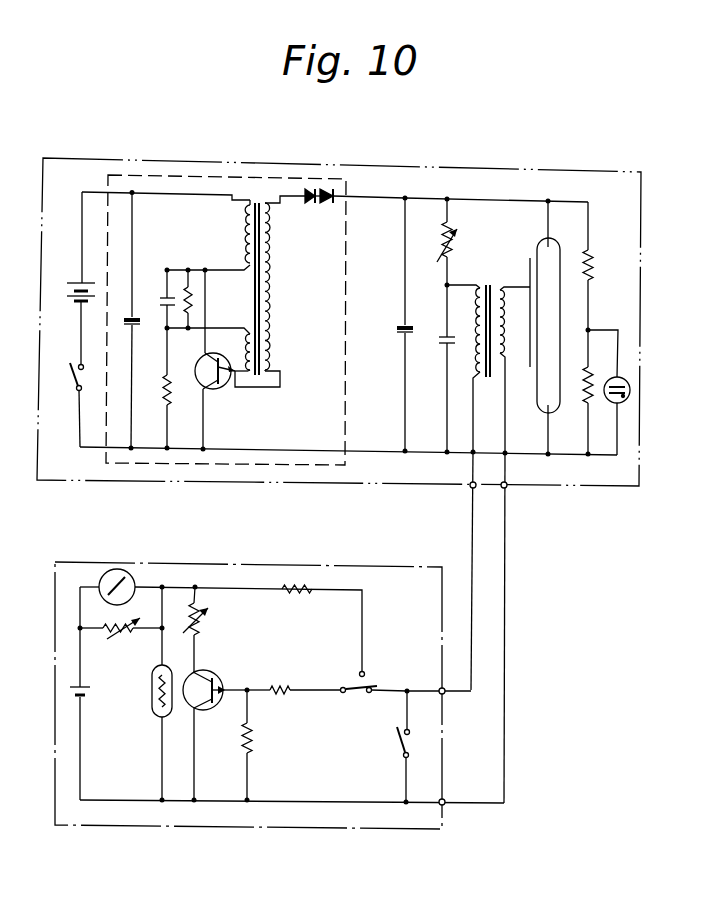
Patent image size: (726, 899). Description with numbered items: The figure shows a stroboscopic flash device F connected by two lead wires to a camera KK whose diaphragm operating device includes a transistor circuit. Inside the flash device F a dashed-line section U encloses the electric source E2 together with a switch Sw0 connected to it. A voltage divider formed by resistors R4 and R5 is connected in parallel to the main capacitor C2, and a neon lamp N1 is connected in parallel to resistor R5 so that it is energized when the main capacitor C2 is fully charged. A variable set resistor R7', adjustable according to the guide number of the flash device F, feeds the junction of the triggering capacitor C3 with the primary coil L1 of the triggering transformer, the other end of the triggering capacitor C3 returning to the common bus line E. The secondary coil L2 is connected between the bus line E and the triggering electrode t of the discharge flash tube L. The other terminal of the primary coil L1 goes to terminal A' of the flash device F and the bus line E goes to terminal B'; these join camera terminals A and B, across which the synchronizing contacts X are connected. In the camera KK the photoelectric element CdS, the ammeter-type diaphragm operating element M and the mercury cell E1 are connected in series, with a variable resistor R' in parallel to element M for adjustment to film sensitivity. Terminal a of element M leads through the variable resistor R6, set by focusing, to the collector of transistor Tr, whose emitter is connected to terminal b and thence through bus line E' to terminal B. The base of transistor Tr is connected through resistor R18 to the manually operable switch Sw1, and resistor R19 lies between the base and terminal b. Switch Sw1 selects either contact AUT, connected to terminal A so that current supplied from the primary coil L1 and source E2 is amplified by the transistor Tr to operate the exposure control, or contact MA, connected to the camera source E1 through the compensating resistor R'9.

The flash device F is at (505, 167).
The DC-DC converter unit U is at (345, 257).
The electric source E2 is at (73, 278).
The power switch Sw0 is at (62, 405).
The main capacitor C2 is at (392, 324).
The variable set resistor R7' is at (461, 242).
The triggering capacitor C3 is at (435, 368).
The primary coil of triggering transformer L1 is at (463, 368).
The secondary coil of triggering transformer L2 is at (515, 370).
The triggering electrode t is at (530, 258).
The electric discharge flash tube L is at (559, 246).
The resistor R4 is at (601, 266).
The resistor R5 is at (577, 392).
The neon lamp N1 is at (625, 398).
The bus line E is at (400, 467).
The terminal of flash device A' is at (465, 571).
The terminal of flash device B' is at (515, 628).
The camera KK is at (240, 561).
The diaphragm operating element M is at (103, 569).
The terminal of element M a is at (161, 575).
The terminal of element M b is at (162, 813).
The mercury cell E1 is at (87, 693).
The variable resistor R' is at (121, 640).
The photoelectric element CdS is at (139, 693).
The variable resistor R6 is at (206, 629).
The transistor Tr is at (215, 674).
The compensating resistor R'9 is at (297, 604).
The contact of switch SW1 MA is at (380, 662).
The resistor R18 is at (294, 706).
The manually operable SPDT switch Sw1 is at (364, 707).
The contact of switch SW1 AUT is at (386, 705).
The camera terminal A is at (439, 702).
The synchronizing contacts X is at (400, 742).
The resistor R19 is at (264, 745).
The camera terminal B is at (450, 791).
The bus line E' is at (356, 833).